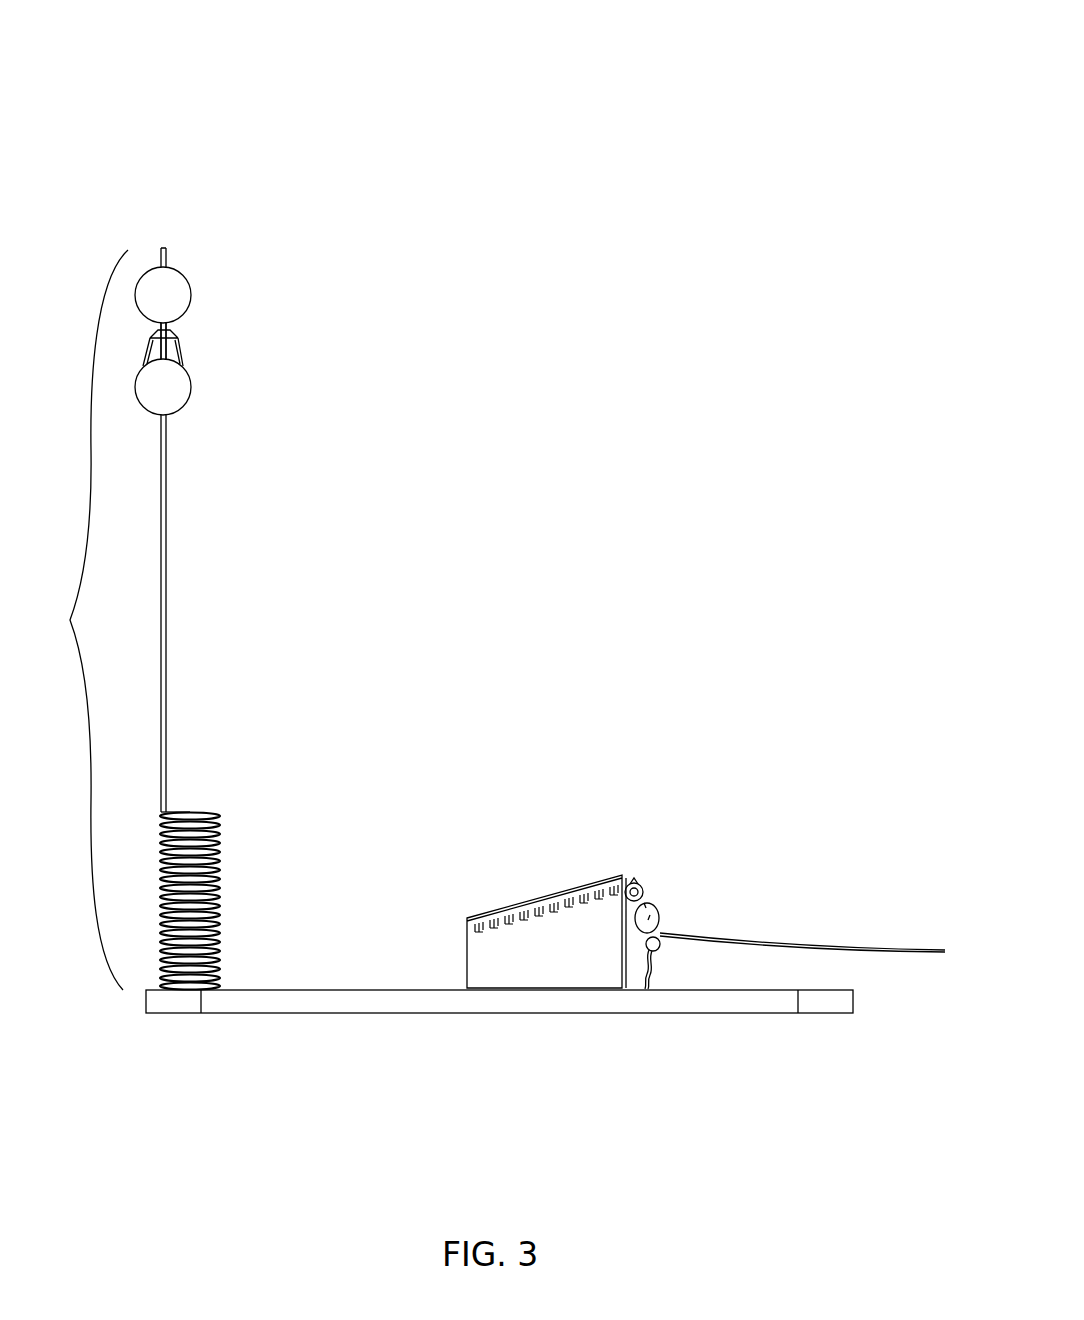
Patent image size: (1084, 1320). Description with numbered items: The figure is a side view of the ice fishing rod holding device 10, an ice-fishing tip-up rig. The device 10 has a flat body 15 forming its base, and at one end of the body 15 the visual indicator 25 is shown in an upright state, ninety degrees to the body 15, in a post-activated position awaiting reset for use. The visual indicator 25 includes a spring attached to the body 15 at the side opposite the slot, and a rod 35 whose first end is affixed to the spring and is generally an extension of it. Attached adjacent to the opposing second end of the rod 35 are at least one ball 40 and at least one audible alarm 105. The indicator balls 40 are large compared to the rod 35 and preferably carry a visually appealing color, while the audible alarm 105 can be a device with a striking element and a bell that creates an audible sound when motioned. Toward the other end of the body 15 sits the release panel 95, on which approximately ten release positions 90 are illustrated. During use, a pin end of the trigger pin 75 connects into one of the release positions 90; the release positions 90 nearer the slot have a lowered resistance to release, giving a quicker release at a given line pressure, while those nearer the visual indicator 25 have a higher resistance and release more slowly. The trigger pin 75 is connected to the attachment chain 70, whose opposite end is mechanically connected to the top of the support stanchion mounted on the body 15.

The ice fishing rod holding device 10 is at (137, 166).
The body 15 is at (315, 1000).
The visual indicator 25 is at (66, 624).
The rod 35 is at (166, 557).
The balls 40 is at (178, 283).
The audible alarm 105 is at (178, 357).
The release panel 95 is at (543, 895).
The attachment chain 70 is at (638, 883).
The release positions 90 is at (640, 889).
The trigger pin 75 is at (655, 965).